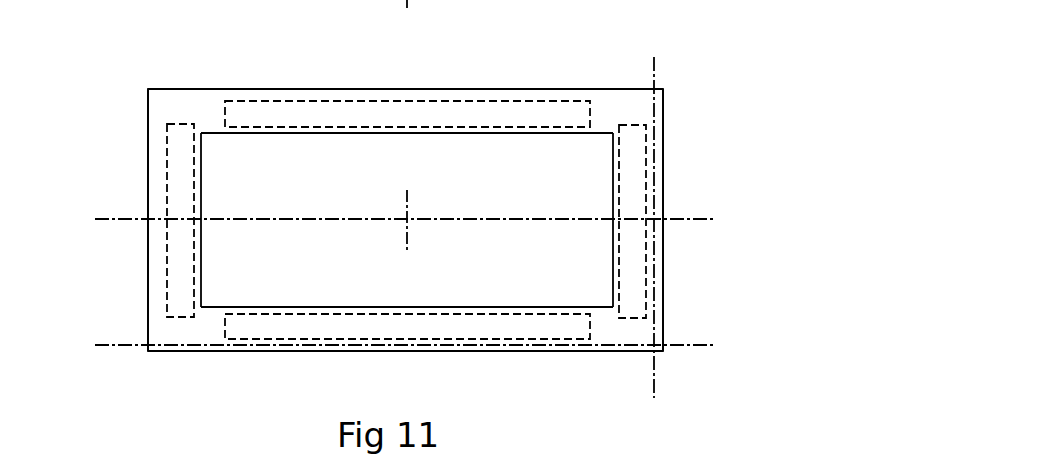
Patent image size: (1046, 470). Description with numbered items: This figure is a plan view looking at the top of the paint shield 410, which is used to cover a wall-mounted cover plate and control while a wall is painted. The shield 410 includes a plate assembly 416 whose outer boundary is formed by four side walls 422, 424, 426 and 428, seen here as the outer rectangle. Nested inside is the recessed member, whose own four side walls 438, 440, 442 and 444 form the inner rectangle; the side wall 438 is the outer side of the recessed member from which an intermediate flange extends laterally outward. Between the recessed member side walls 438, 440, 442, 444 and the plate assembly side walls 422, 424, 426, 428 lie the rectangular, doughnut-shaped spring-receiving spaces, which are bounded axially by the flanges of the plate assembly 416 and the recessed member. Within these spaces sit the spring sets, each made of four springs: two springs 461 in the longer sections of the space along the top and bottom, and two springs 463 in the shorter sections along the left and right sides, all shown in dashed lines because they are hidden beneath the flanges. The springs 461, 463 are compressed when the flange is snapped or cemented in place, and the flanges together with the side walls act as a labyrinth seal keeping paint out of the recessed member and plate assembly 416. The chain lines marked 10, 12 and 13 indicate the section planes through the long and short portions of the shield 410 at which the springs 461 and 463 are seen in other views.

The shield 410 is at (267, 88).
The plate assembly 416 is at (368, 97).
The side wall 422 is at (148, 116).
The side wall 424 is at (503, 89).
The side wall 426 is at (663, 130).
The side wall 428 is at (487, 351).
The side wall of recessed member 438 is at (613, 251).
The side wall of recessed member 440 is at (201, 183).
The side wall of recessed member 442 is at (407, 133).
The side wall of recessed member 444 is at (293, 307).
The spring 461 is at (305, 115).
The spring 463 is at (633, 197).
The section line 10- 10 is at (95, 173).
The section line 12- 12 is at (95, 298).
The section line 13- 13 is at (602, 57).